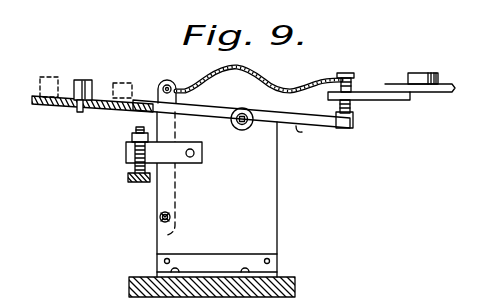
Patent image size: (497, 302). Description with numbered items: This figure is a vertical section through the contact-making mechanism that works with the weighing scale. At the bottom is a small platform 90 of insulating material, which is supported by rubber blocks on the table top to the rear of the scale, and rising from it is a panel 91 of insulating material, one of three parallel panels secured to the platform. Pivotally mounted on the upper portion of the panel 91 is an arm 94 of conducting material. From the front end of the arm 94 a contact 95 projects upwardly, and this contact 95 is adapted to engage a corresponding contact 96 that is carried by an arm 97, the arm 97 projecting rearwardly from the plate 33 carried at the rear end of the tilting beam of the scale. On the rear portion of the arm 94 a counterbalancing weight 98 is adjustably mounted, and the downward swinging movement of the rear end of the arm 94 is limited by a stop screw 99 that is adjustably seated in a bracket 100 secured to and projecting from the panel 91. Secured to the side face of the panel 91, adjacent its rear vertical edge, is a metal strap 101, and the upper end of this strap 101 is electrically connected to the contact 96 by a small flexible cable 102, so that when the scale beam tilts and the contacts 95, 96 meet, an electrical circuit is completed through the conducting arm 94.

The plate 33 is at (437, 92).
The platform 90 is at (138, 277).
The panel 91 is at (264, 213).
The arm 94 is at (297, 125).
The contact 95 is at (353, 115).
The contact 96 is at (274, 112).
The arm 97 is at (371, 92).
The counterbalancing weight 98 is at (87, 80).
The stop screw 99 is at (133, 129).
The bracket 100 is at (126, 155).
The metal strap 101 is at (165, 80).
The flexible cable 102 is at (214, 74).